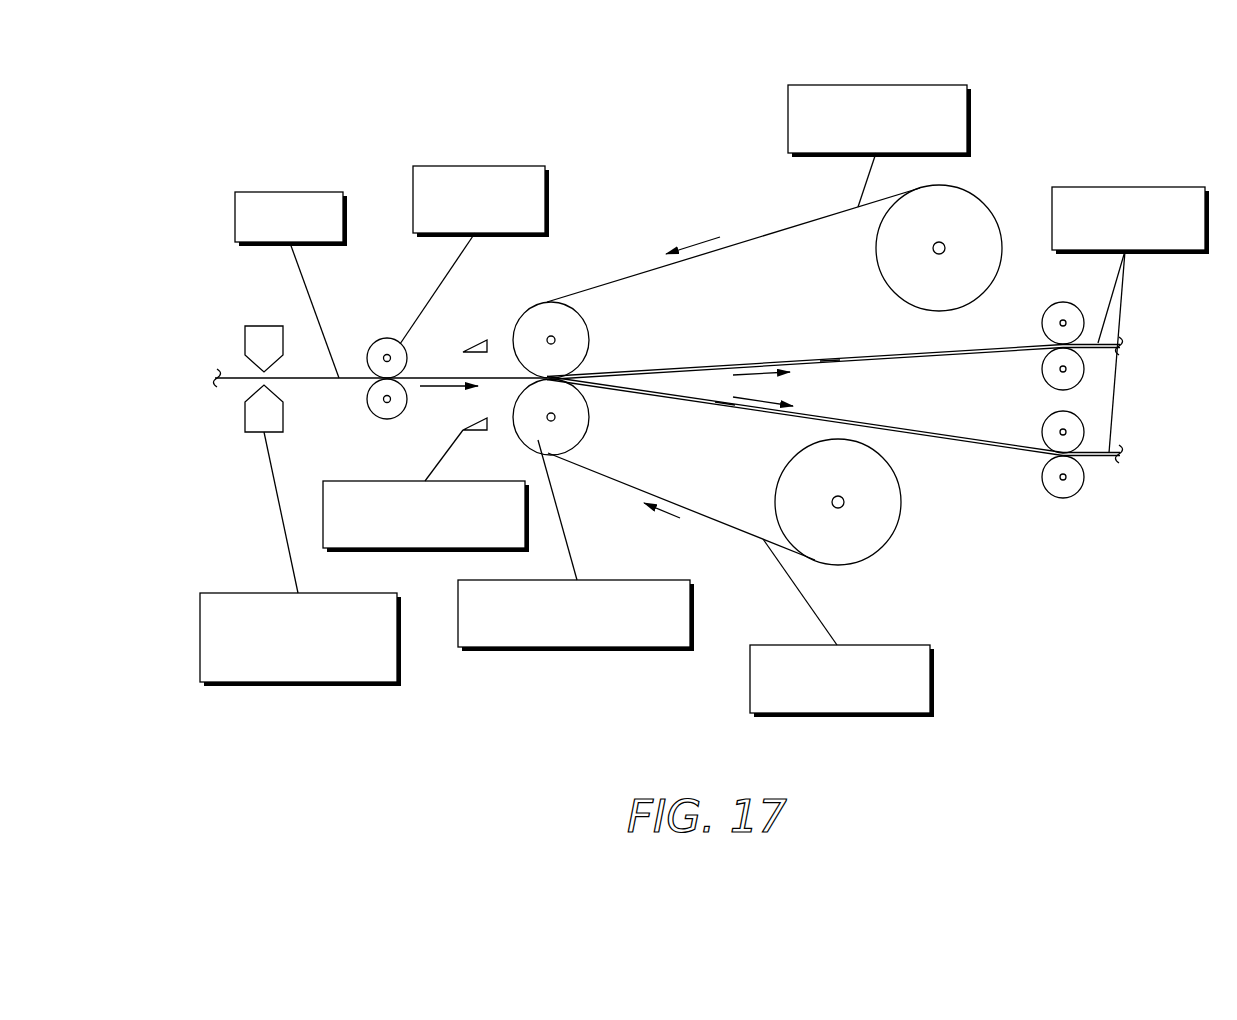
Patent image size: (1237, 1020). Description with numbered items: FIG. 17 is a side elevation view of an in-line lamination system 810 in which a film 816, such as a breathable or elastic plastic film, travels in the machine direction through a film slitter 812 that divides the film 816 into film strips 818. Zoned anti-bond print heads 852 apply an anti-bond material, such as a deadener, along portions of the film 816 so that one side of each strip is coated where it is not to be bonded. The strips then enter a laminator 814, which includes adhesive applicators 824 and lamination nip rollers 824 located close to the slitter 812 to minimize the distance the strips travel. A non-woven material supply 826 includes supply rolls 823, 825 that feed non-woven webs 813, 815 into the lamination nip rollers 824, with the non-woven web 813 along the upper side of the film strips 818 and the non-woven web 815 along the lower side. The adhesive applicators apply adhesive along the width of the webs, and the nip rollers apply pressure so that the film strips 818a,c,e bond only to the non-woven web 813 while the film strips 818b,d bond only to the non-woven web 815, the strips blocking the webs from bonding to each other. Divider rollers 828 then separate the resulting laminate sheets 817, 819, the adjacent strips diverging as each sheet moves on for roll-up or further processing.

The in-line lamination system 810 is at (320, 114).
The film slitter 812 is at (488, 165).
The non-woven web 813 is at (862, 85).
The laminator 814 is at (565, 276).
The non-woven web 815 is at (932, 678).
The film 816 is at (305, 191).
The laminate sheet 817 is at (875, 351).
The film strips 818 is at (445, 375).
The film strips 818a,c,e is at (792, 341).
The film strips 818b,d is at (686, 428).
The laminate sheet 819 is at (918, 428).
The supply roll 823 is at (985, 182).
The lamination nip rollers 824 is at (400, 481).
The supply roll 825 is at (890, 548).
The non-woven material supply 826 is at (1022, 200).
The divider rollers 828 is at (1041, 303).
The zoned anti-bond print heads 852 is at (272, 593).